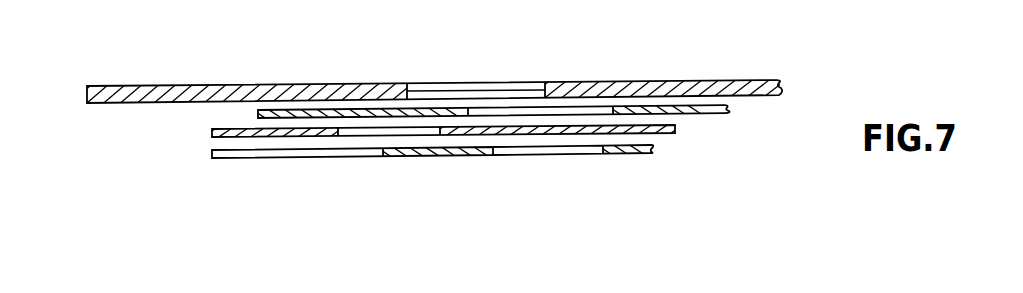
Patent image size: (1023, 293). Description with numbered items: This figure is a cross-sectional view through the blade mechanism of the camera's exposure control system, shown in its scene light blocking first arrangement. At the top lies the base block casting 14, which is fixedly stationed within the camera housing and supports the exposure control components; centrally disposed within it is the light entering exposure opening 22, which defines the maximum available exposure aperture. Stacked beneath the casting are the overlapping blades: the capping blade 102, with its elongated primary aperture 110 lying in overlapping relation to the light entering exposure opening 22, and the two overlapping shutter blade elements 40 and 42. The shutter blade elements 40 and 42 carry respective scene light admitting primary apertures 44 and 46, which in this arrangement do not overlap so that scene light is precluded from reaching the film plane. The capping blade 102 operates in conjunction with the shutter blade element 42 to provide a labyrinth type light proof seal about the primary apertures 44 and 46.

The base block casting 14 is at (666, 82).
The light entering exposure opening 22 is at (445, 90).
The capping blade 102 is at (322, 110).
The elongated primary aperture 110 is at (565, 110).
The shutter blade element 40 is at (318, 131).
The primary aperture 44 is at (421, 130).
The primary aperture 46 is at (548, 151).
The shutter blade element 42 is at (652, 147).